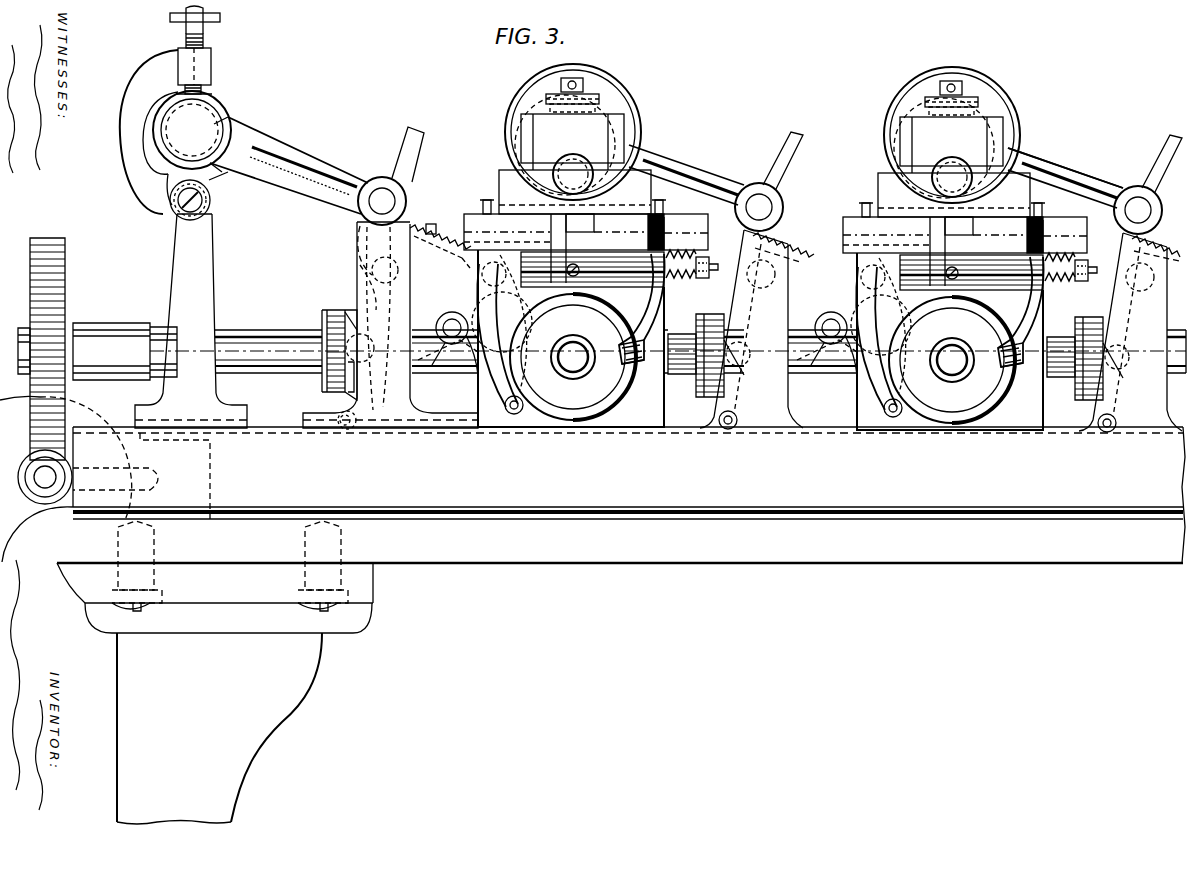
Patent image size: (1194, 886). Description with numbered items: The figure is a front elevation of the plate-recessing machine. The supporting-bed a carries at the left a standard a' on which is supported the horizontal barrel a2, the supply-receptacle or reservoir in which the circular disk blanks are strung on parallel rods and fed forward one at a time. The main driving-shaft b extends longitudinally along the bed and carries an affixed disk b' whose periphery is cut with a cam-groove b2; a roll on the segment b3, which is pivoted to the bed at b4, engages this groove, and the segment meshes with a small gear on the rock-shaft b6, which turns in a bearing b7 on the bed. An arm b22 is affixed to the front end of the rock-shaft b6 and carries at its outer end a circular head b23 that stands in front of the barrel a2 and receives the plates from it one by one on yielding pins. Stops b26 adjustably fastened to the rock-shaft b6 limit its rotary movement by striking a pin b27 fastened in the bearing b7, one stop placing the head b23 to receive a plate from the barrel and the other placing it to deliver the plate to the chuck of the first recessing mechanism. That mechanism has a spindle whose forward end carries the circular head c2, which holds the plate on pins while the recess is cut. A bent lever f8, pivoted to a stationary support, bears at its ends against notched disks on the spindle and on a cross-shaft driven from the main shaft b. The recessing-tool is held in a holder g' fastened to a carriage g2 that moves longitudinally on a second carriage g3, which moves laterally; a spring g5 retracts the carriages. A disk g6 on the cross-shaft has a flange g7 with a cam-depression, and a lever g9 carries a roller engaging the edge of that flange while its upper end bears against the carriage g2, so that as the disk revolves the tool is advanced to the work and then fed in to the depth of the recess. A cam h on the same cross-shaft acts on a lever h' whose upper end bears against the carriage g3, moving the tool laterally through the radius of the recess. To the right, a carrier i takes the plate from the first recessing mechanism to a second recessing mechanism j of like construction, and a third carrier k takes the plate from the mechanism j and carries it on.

The supporting-bed a is at (592, 531).
The standard a' is at (181, 321).
The horizontal barrel a2 is at (219, 106).
The main driving-shaft b is at (629, 337).
The disk b' is at (309, 385).
The cam-groove b2 is at (330, 307).
The segment b3 is at (421, 236).
The pivot b4 is at (338, 427).
The rock-shaft b6 is at (357, 217).
The bearing b7 is at (353, 277).
The arm b22 is at (333, 147).
The circular head b23 is at (218, 126).
The stops b26 is at (425, 148).
The pin b27 is at (443, 325).
The circular head c2 is at (600, 118).
The bent lever f8 is at (472, 265).
The holder g' is at (594, 138).
The carriage g2 is at (630, 186).
The carriage g3 is at (481, 222).
The spring g5 is at (683, 270).
The disk g6 is at (562, 402).
The flange g7 is at (583, 415).
The lever g9 is at (652, 233).
The cam h is at (390, 344).
The lever h' is at (430, 332).
The carrier i is at (748, 180).
The second recessing mechanism j is at (989, 249).
The third carrier k is at (1096, 178).